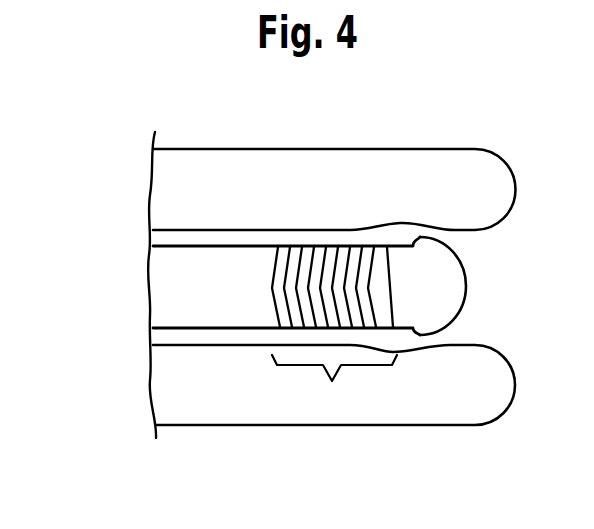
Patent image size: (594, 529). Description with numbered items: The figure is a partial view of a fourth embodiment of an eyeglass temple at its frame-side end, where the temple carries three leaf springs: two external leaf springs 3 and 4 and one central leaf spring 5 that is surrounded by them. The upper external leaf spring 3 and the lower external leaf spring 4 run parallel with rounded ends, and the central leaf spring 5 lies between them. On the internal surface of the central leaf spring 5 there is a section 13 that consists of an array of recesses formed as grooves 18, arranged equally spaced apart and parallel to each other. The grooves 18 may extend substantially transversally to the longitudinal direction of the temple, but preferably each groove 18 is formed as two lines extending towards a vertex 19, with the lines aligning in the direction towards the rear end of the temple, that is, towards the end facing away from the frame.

The external leaf spring 3 is at (173, 180).
The external leaf spring 4 is at (173, 387).
The central leaf spring 5 is at (167, 313).
The section of internal surface 13 is at (333, 385).
The grooves 18 is at (390, 268).
The vertex 19 is at (265, 287).